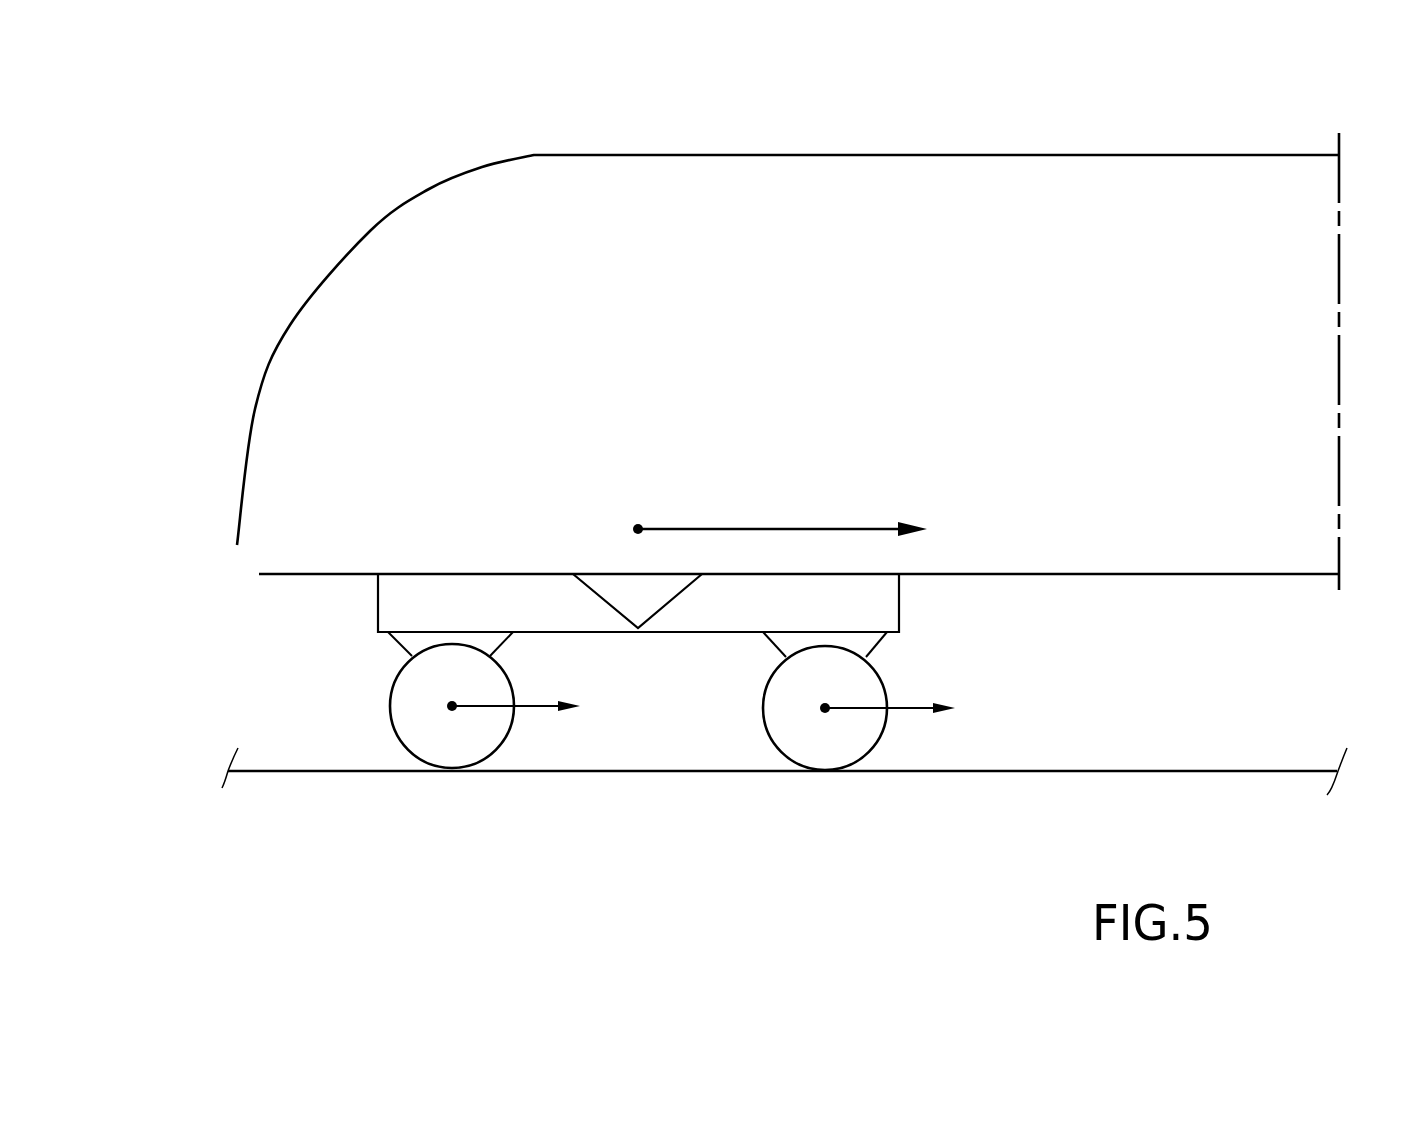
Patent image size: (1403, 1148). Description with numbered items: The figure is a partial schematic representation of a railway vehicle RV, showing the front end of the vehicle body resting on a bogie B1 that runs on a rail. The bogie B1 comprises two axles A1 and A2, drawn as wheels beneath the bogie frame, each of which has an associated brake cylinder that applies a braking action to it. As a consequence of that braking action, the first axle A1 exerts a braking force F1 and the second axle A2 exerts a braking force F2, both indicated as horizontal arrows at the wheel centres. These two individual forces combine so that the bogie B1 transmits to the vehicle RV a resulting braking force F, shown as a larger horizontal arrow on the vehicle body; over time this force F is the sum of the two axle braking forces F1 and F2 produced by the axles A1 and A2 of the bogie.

The railway vehicle RV is at (428, 254).
The braking force F is at (738, 527).
The bogie B1 is at (402, 602).
The axle A1 is at (412, 725).
The axle A2 is at (860, 728).
The braking force F1 is at (542, 705).
The braking force F2 is at (910, 705).